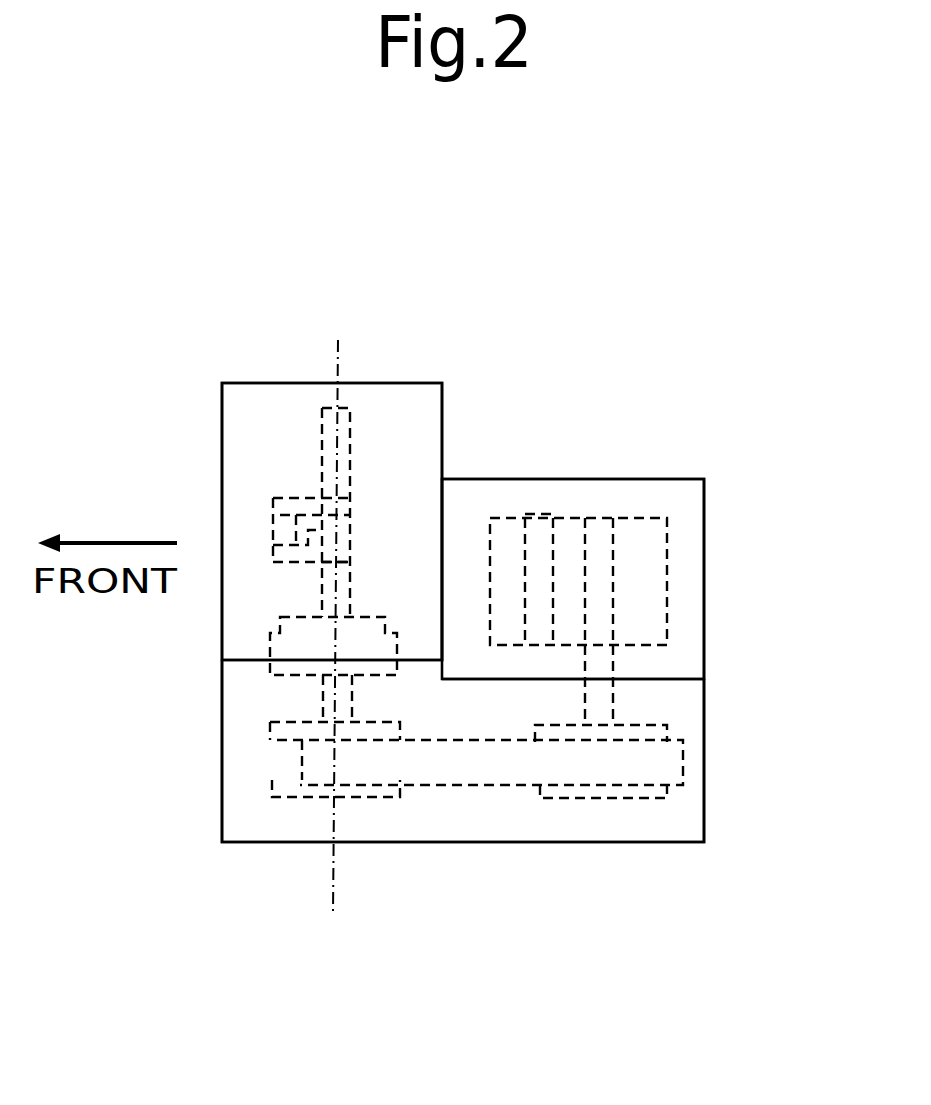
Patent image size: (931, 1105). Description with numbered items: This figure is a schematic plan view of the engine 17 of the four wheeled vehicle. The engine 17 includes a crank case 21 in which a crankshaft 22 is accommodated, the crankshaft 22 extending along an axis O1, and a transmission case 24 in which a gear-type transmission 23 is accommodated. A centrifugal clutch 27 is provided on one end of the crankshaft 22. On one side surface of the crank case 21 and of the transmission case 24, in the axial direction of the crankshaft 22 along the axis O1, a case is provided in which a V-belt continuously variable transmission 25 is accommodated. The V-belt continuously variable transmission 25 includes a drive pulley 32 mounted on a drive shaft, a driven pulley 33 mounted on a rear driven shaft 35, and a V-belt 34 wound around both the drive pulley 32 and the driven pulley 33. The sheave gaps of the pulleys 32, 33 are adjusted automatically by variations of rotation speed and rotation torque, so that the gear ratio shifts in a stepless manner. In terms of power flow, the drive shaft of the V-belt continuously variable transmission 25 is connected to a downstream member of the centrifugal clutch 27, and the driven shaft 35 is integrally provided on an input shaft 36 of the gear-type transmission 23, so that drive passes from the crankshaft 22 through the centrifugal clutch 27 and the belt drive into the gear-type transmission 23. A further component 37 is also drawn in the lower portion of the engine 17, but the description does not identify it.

The engine 17 is at (268, 340).
The axis O1 is at (338, 345).
The crank case 21 is at (373, 393).
The crankshaft 22 is at (317, 457).
The gear-type transmission 23 is at (683, 592).
The transmission case 24 is at (565, 479).
The V-belt continuously variable transmission 25 is at (457, 829).
The centrifugal clutch 27 is at (265, 670).
The drive pulley 32 is at (310, 800).
The driven pulley 33 is at (625, 798).
The V-belt 34 is at (508, 785).
The driven shaft 35 is at (613, 712).
The input shaft 36 is at (610, 558).
The support block 37 is at (320, 700).